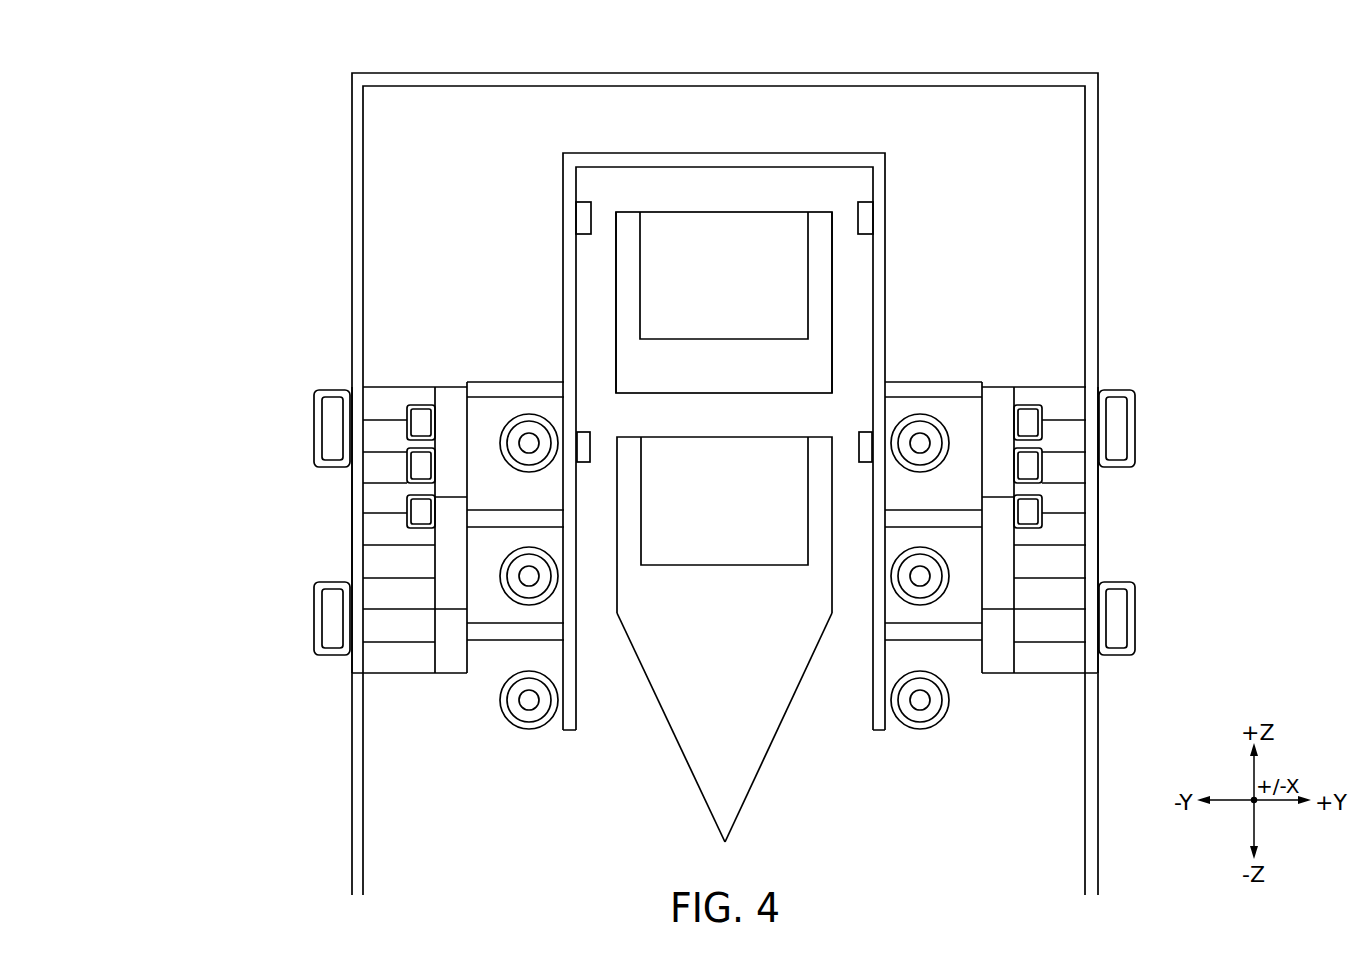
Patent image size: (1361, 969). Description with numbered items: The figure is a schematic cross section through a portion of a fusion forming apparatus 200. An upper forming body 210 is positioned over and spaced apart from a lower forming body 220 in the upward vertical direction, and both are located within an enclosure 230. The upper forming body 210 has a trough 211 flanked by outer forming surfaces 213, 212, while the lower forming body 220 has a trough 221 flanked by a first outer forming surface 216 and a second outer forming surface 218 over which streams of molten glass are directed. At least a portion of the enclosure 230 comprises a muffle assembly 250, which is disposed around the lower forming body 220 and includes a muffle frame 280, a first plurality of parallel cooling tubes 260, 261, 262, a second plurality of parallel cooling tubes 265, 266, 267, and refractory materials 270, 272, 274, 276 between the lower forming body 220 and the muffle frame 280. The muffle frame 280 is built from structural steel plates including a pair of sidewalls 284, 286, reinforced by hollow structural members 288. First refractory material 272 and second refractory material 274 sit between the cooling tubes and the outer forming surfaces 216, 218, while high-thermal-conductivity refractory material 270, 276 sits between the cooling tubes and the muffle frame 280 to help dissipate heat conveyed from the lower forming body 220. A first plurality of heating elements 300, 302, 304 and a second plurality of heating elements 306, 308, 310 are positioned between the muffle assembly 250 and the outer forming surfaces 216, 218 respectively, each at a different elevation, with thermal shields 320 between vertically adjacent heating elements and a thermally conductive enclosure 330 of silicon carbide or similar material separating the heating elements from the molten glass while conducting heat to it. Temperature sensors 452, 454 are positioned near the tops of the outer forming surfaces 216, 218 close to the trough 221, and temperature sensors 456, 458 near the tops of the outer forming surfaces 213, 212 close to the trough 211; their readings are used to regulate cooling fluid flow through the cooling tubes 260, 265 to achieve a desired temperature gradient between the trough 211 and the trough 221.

The fusion forming apparatus 200 is at (674, 447).
The enclosure 230 is at (1100, 62).
The upper forming body 210 is at (693, 476).
The trough 211 is at (674, 282).
The outer forming surface 212 is at (832, 226).
The outer forming surface 213 is at (616, 226).
The trough 221 is at (714, 484).
The lower forming body 220 is at (728, 726).
The first outer forming surface 216 is at (617, 610).
The second outer forming surface 218 is at (832, 610).
The thermally conductive enclosure 330 is at (563, 306).
The thermal shields 320 is at (543, 382).
The heating element 300 is at (502, 447).
The heating element 302 is at (503, 585).
The heating element 304 is at (529, 730).
The heating element 306 is at (947, 447).
The heating element 308 is at (946, 585).
The heating element 310 is at (920, 730).
The muffle assembly 250 is at (395, 534).
The refractory material 270 is at (372, 383).
The first refractory material 272 is at (462, 384).
The second refractory material 274 is at (987, 384).
The refractory material 276 is at (1077, 383).
The first cooling tube 260 is at (371, 443).
The cooling tube 261 is at (407, 470).
The cooling tube 262 is at (407, 503).
The second cooling tube 265 is at (1082, 440).
The cooling tube 266 is at (1042, 470).
The cooling tube 267 is at (1042, 503).
The muffle frame 280 is at (725, 497).
The sidewall 284 is at (350, 570).
The sidewall 286 is at (1098, 570).
The structural members 288 is at (314, 420).
The temperature sensor 452 is at (591, 445).
The temperature sensor 454 is at (858, 445).
The temperature sensor 456 is at (588, 205).
The temperature sensor 458 is at (861, 205).